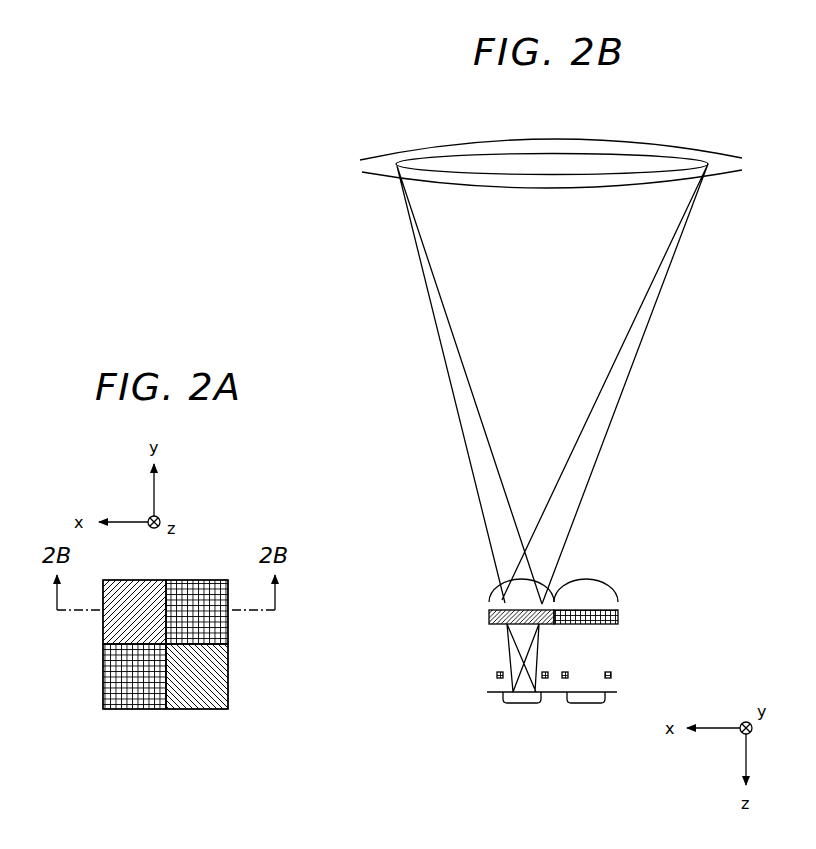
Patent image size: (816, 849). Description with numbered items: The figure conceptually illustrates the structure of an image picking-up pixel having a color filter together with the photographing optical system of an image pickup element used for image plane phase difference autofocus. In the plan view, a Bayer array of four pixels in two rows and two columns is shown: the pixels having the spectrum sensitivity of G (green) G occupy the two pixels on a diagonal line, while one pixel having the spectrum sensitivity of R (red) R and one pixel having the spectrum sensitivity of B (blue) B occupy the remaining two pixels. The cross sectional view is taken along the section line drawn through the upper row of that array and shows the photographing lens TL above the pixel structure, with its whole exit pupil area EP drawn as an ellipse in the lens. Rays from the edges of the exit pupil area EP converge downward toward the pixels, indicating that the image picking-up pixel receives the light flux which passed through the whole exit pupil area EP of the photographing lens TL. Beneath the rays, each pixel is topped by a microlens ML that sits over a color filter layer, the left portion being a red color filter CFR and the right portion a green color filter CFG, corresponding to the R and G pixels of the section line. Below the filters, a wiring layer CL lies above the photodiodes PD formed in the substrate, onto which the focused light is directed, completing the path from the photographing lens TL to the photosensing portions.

In FIG. 2B, the photographing lens TL is at (380, 160).
In FIG. 2B, the exit pupil area EP is at (437, 165).
In FIG. 2B, the microlens ML is at (530, 588).
In FIG. 2B, the red color filter CFR is at (490, 615).
In FIG. 2B, the green color filter CFG is at (618, 613).
In FIG. 2B, the wiring layer CL is at (610, 671).
In FIG. 2B, the photodiode PD is at (522, 703).
In FIG. 2A, the R (red) spectrum sensitivity pixel R is at (134, 612).
In FIG. 2A, the G (green) spectrum sensitivity pixel G is at (165, 644).
In FIG. 2A, the B (blue) spectrum sensitivity pixel B is at (197, 676).